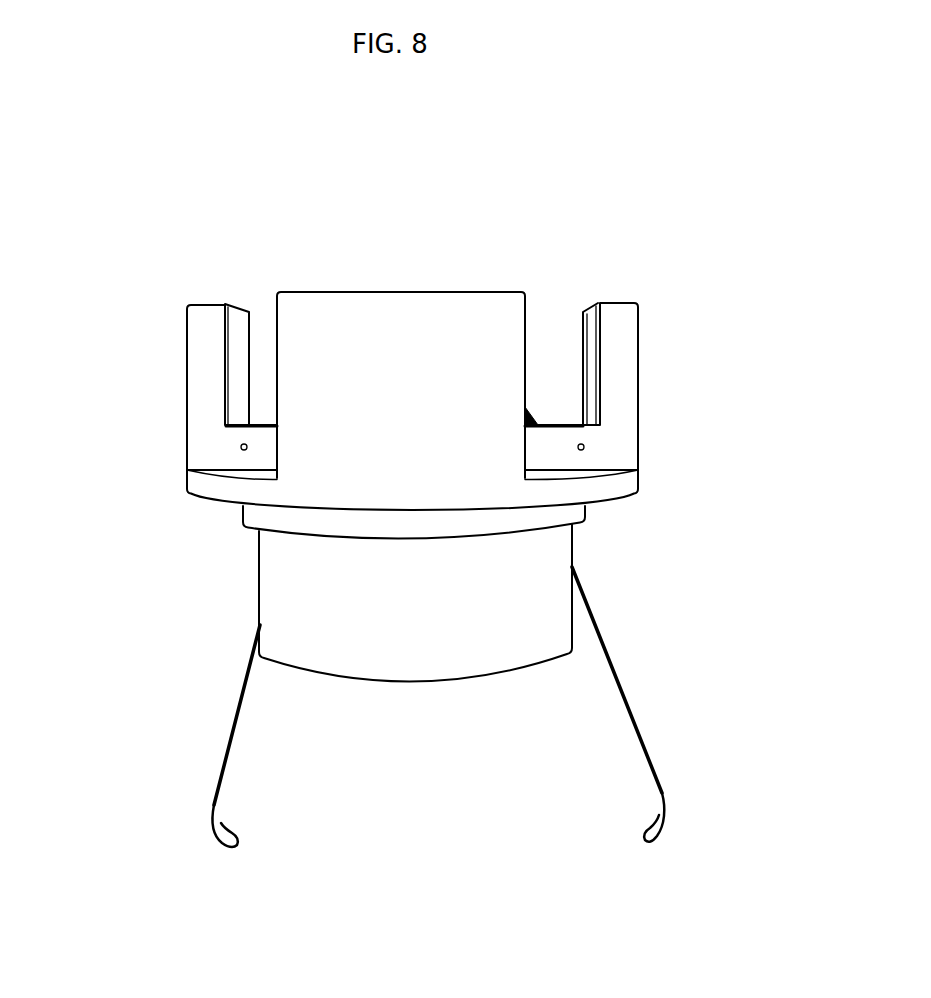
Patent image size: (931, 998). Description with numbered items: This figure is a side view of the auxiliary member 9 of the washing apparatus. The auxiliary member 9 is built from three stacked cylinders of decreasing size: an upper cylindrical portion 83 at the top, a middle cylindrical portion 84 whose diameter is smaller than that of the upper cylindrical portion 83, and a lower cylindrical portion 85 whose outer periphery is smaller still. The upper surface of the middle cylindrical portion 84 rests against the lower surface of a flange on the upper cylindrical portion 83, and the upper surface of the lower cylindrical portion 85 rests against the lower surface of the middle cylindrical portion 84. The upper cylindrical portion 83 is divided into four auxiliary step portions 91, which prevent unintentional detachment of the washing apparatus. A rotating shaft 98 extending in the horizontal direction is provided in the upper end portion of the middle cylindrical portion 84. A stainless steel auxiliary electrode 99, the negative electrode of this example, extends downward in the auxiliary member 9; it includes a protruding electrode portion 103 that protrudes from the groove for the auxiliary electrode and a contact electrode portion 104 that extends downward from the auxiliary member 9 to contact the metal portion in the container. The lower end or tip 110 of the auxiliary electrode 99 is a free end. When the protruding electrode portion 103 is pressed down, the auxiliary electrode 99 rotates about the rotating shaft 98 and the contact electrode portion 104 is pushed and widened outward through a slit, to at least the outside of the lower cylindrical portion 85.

The auxiliary member 9 is at (645, 231).
The upper cylindrical portion 83 is at (612, 397).
The middle cylindrical portion 84 is at (553, 522).
The lower cylindrical portion 85 is at (520, 582).
The auxiliary step portion 91 is at (381, 318).
The rotating shaft 98 is at (240, 450).
The auxiliary electrode 99 is at (217, 767).
The protruding electrode portion 103 is at (531, 412).
The contact electrode portion 104 is at (237, 705).
The lower end (tip) 110 is at (213, 840).